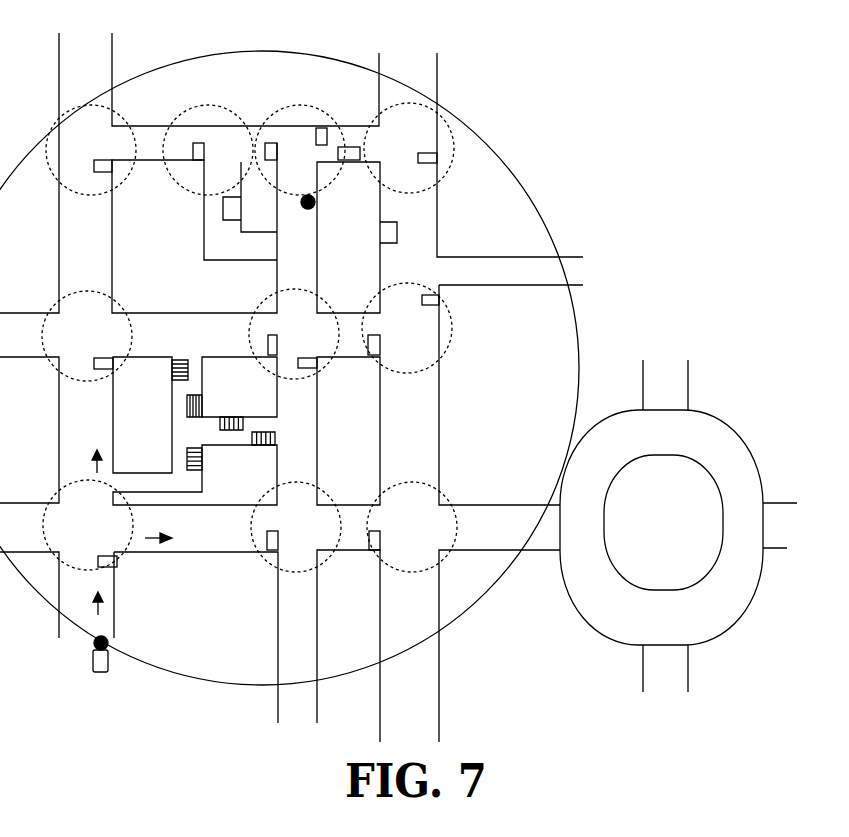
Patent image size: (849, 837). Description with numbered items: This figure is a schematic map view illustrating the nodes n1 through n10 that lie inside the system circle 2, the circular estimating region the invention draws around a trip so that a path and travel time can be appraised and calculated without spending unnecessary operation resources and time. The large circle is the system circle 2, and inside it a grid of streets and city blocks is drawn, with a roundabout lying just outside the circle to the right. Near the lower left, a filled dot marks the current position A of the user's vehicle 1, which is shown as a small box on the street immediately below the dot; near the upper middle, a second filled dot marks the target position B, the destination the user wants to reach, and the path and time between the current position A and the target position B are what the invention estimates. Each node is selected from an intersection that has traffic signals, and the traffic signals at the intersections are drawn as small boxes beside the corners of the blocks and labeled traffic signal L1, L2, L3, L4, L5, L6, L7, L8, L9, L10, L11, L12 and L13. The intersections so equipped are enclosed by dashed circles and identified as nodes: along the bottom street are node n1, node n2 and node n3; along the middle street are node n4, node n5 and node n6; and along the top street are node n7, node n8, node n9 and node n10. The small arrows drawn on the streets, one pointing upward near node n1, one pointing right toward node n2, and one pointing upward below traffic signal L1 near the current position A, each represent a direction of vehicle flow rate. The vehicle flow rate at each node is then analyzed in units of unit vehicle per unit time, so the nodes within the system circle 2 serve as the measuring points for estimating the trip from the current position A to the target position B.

The user's vehicle 1 is at (93, 665).
The system circle 2 is at (513, 172).
The current position A is at (108, 641).
The target position B is at (315, 202).
The node n1 is at (55, 492).
The node n2 is at (308, 478).
The node n3 is at (415, 478).
The node n4 is at (100, 292).
The node n5 is at (305, 290).
The node n6 is at (400, 280).
The node n7 is at (100, 105).
The node n8 is at (232, 107).
The node n9 is at (333, 107).
The node n10 is at (410, 103).
The traffic signal L1 is at (107, 572).
The traffic signal L2 is at (261, 540).
The traffic signal L3 is at (364, 540).
The traffic signal L4 is at (102, 374).
The traffic signal L5 is at (261, 345).
The traffic signal L6 is at (306, 374).
The traffic signal L7 is at (363, 345).
The traffic signal L8 is at (428, 310).
The traffic signal L9 is at (101, 177).
The traffic signal L10 is at (183, 151).
The traffic signal L11 is at (256, 151).
The traffic signal L12 is at (338, 144).
The traffic signal L13 is at (426, 169).